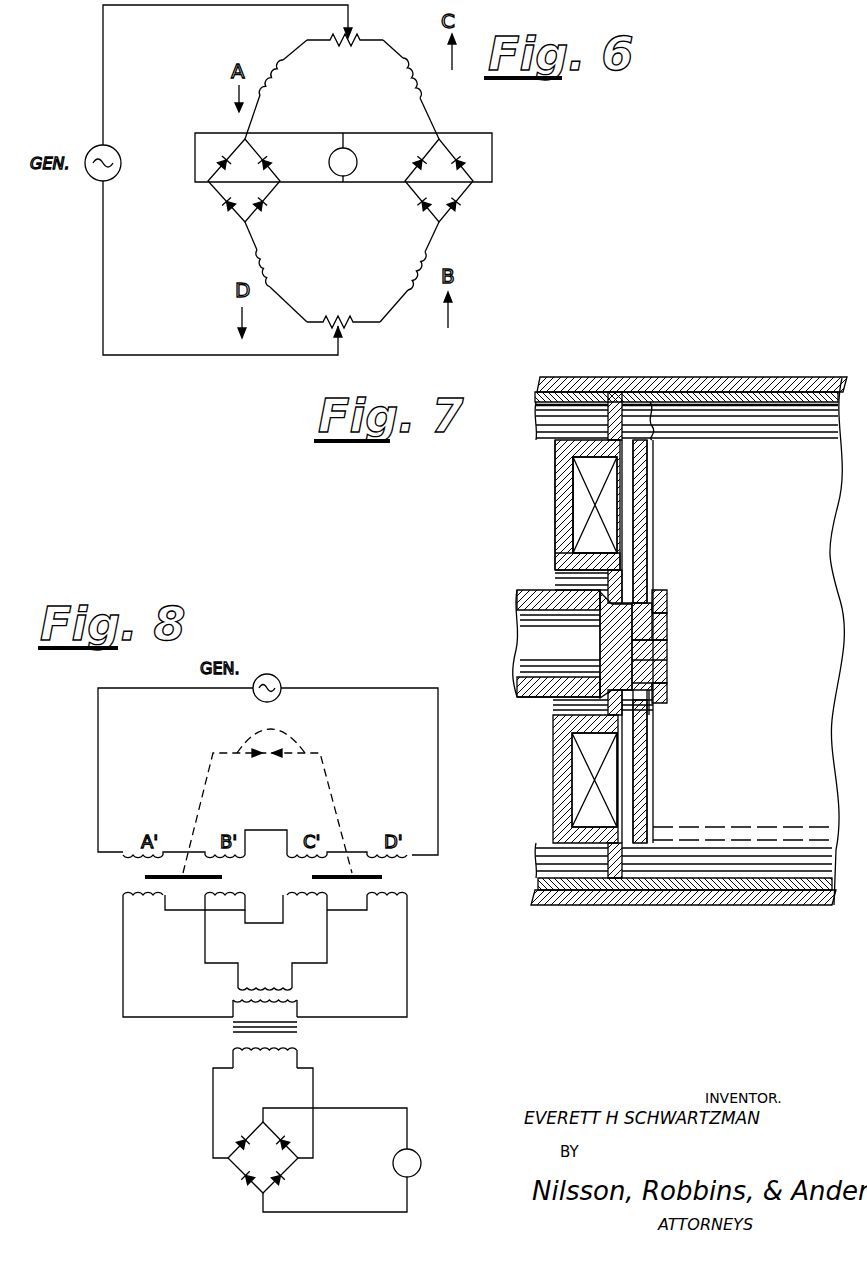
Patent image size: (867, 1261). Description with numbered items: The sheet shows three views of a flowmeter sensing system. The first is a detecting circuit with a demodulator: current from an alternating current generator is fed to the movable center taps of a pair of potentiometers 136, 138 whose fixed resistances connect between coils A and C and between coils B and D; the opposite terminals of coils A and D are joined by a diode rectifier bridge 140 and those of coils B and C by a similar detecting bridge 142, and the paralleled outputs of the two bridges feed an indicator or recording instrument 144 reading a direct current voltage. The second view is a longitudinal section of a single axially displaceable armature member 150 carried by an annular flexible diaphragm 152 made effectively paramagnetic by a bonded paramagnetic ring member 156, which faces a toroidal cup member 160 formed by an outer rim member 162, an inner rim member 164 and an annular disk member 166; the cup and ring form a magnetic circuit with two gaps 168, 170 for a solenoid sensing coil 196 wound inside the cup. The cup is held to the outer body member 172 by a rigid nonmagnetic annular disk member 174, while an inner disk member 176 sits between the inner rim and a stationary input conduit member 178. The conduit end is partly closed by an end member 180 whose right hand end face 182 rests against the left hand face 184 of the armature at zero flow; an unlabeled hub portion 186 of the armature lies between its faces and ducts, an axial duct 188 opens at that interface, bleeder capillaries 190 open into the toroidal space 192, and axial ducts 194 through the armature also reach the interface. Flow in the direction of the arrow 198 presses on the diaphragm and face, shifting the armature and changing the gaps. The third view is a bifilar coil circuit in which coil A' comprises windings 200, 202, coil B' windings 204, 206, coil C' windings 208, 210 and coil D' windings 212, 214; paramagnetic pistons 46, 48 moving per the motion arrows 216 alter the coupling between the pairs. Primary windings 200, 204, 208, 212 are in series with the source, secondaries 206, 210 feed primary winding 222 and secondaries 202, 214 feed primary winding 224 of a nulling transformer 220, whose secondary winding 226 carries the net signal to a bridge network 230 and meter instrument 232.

In FIG. 6, the potentiometer 136 is at (357, 38).
In FIG. 6, the potentiometer 138 is at (338, 321).
In FIG. 6, the diode rectifier bridge 140 is at (222, 220).
In FIG. 6, the detecting bridge 142 is at (456, 218).
In FIG. 6, the indicator or recording instrument 144 is at (329, 156).
In FIG. 7, the armature member 150 is at (672, 580).
In FIG. 7, the diaphragm 152 is at (656, 496).
In FIG. 7, the paramagnetic ring member 156 is at (650, 528).
In FIG. 7, the toroidal cup member 160 is at (573, 493).
In FIG. 7, the outer rim member 162 is at (555, 446).
In FIG. 7, the inner rim member 164 is at (555, 566).
In FIG. 7, the annular disk member 166 is at (556, 512).
In FIG. 7, the gap 168 is at (655, 441).
In FIG. 7, the gap 170 is at (655, 566).
In FIG. 7, the outer body member 172 is at (712, 378).
In FIG. 7, the rigid nonmagnetic annular disk member 174 is at (608, 400).
In FIG. 7, the inner disk member 176 is at (555, 584).
In FIG. 7, the input conduit member 178 is at (528, 688).
In FIG. 7, the end member 180 is at (600, 641).
In FIG. 7, the right hand end face 182 is at (520, 602).
In FIG. 7, the left hand face 184 is at (668, 636).
In FIG. 7, the ring 186 is at (668, 658).
In FIG. 7, the axial duct 188 is at (520, 681).
In FIG. 7, the bleeder capillaries 190 is at (592, 703).
In FIG. 7, the toroidal space 192 is at (654, 713).
In FIG. 7, the axial ducts 194 is at (668, 620).
In FIG. 7, the solenoid sensing coil 196 is at (573, 472).
In FIG. 7, the arrow 198 is at (520, 637).
In FIG. 8, the winding 200 is at (123, 858).
In FIG. 8, the winding 202 is at (123, 890).
In FIG. 8, the winding 204 is at (210, 858).
In FIG. 8, the winding 206 is at (228, 897).
In FIG. 8, the winding 208 is at (322, 858).
In FIG. 8, the winding 210 is at (320, 897).
In FIG. 8, the winding 212 is at (400, 858).
In FIG. 8, the winding 214 is at (400, 897).
In FIG. 8, the motion arrows 216 is at (240, 753).
In FIG. 8, the nulling transformer 220 is at (323, 1017).
In FIG. 8, the primary winding 222 is at (292, 984).
In FIG. 8, the primary winding 224 is at (297, 1012).
In FIG. 8, the secondary winding 226 is at (297, 1044).
In FIG. 8, the bridge network 230 is at (292, 1150).
In FIG. 8, the meter instrument 232 is at (421, 1160).
In FIG. 8, the paramagnetic piston 46 is at (145, 877).
In FIG. 8, the paramagnetic piston 48 is at (382, 877).